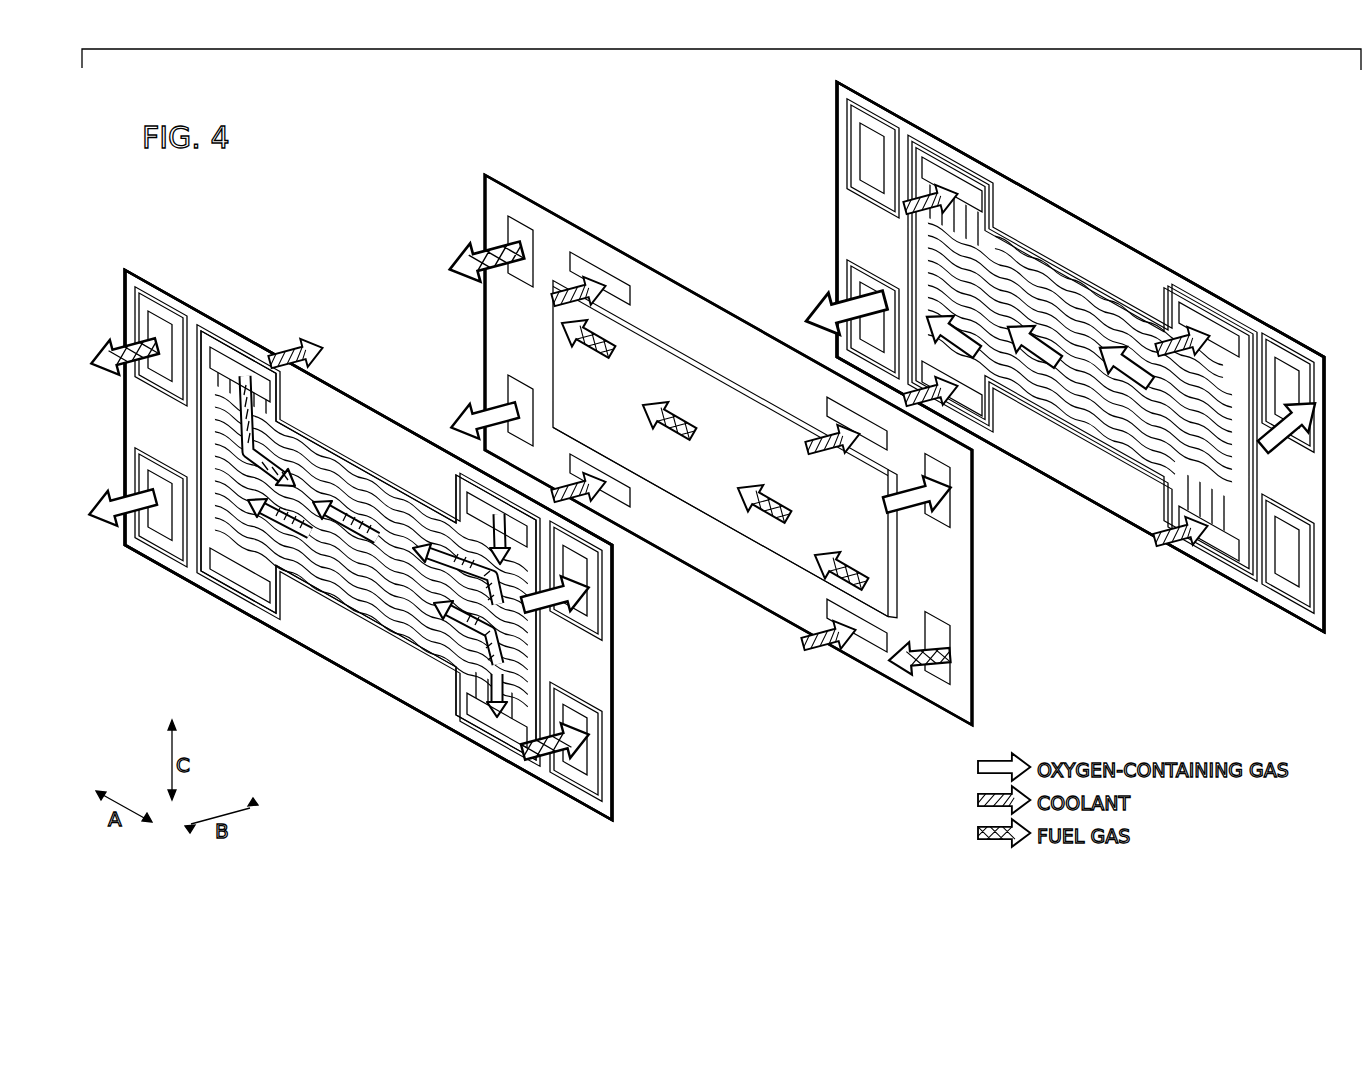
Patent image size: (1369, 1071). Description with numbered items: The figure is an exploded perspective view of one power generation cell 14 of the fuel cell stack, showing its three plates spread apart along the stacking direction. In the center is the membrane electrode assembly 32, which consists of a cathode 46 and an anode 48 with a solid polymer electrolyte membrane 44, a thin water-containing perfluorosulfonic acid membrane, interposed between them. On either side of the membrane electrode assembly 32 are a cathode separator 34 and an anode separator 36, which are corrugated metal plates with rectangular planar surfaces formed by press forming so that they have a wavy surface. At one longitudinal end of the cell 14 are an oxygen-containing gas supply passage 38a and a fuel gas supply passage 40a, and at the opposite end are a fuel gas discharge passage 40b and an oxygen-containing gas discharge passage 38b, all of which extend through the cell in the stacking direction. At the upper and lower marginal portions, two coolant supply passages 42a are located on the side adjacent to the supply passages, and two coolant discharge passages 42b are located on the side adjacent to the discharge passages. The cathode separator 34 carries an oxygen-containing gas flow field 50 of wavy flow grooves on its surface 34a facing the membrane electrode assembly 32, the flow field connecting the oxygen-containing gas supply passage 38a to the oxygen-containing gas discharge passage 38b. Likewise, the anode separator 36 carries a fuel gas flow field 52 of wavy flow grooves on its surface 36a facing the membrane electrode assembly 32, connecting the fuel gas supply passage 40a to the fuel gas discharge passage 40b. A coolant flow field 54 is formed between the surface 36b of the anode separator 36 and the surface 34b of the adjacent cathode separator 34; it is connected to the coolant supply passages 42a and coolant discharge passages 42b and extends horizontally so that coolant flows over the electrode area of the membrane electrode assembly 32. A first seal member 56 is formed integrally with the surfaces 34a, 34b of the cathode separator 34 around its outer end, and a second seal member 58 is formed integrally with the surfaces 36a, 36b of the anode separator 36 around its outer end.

The power generation cell 14 is at (283, 204).
The membrane electrode assembly 32 is at (505, 188).
The cathode separator 34 is at (897, 116).
The surface of cathode separator 34a is at (1118, 486).
The surface of cathode separator 34b is at (1133, 482).
The anode separator 36 is at (142, 281).
The surface of anode separator 36a is at (430, 692).
The surface of anode separator 36b is at (410, 670).
The oxygen-containing gas supply passage 38a is at (583, 610).
The oxygen-containing gas discharge passage 38b is at (158, 530).
The fuel gas supply passage 40a is at (583, 756).
The fuel gas discharge passage 40b is at (150, 326).
The coolant supply passage 42a is at (486, 706).
The coolant discharge passage 42b is at (228, 372).
The solid polymer electrolyte membrane 44 is at (942, 697).
The cathode 46 is at (697, 380).
The anode 48 is at (778, 534).
The oxygen-containing gas flow field 50 is at (1056, 460).
The fuel gas flow field 52 is at (318, 446).
The coolant flow field 54 is at (350, 586).
The first seal member 56 is at (1030, 242).
The second seal member 58 is at (218, 332).